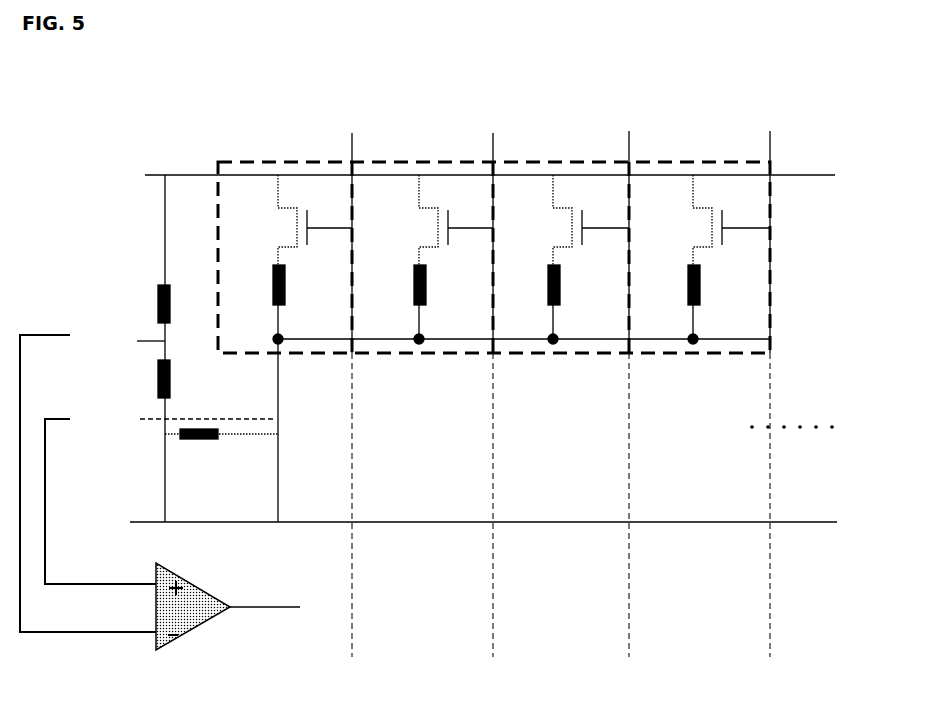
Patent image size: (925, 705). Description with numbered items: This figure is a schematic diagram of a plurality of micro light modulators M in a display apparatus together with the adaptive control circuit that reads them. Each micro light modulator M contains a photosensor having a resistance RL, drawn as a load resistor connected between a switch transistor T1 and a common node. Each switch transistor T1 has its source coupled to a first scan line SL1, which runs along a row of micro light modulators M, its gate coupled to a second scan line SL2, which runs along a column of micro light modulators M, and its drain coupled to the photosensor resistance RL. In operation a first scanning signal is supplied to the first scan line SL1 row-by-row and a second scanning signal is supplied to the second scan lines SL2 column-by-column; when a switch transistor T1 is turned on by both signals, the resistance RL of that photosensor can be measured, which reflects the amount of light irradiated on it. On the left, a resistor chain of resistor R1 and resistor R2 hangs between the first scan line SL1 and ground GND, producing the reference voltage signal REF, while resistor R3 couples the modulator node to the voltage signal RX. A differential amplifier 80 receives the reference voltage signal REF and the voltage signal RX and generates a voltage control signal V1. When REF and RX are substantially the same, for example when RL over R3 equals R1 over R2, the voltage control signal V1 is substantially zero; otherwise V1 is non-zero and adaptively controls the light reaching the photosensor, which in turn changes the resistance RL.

The differential amplifier 80 is at (200, 622).
The switch transistor T1 is at (511, 220).
The resistance of the photosensor RL is at (507, 302).
The micro light modulator M is at (723, 377).
The resistor R1 is at (184, 304).
The resistor R2 is at (184, 381).
The resistor R3 is at (221, 448).
The first scan line SL1 is at (464, 173).
The second scan line SL2 is at (566, 376).
The reference voltage signal REF is at (92, 478).
The voltage signal Rx RX is at (160, 496).
The ground GND is at (449, 512).
The voltage control signal V1 is at (265, 607).